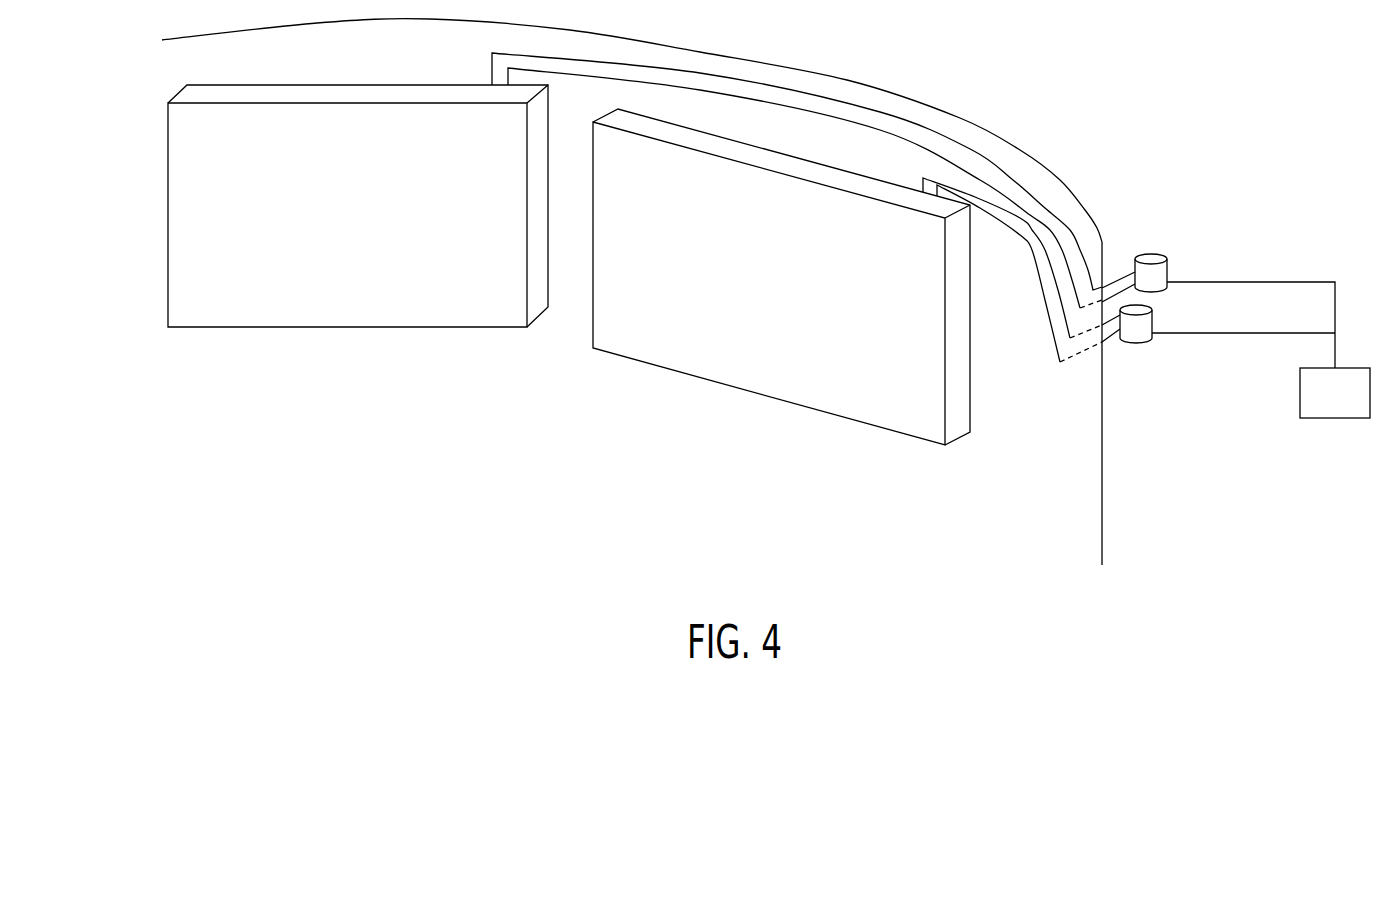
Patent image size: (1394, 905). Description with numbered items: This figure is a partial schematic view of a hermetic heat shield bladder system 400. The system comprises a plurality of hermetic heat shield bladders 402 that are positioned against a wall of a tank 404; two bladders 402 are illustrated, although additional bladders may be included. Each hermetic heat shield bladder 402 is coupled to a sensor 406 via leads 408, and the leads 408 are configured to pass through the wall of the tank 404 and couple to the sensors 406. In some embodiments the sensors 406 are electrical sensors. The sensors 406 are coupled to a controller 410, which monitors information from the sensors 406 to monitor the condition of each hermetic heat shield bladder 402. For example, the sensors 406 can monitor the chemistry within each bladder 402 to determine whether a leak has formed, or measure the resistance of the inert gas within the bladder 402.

The hermetic heat shield bladder system 400 is at (1082, 105).
The hermetic heat shield bladder 402 is at (393, 312).
The tank 404 is at (1102, 488).
The sensor 406 is at (1167, 272).
The leads 408 is at (508, 82).
The controller 410 is at (1300, 390).